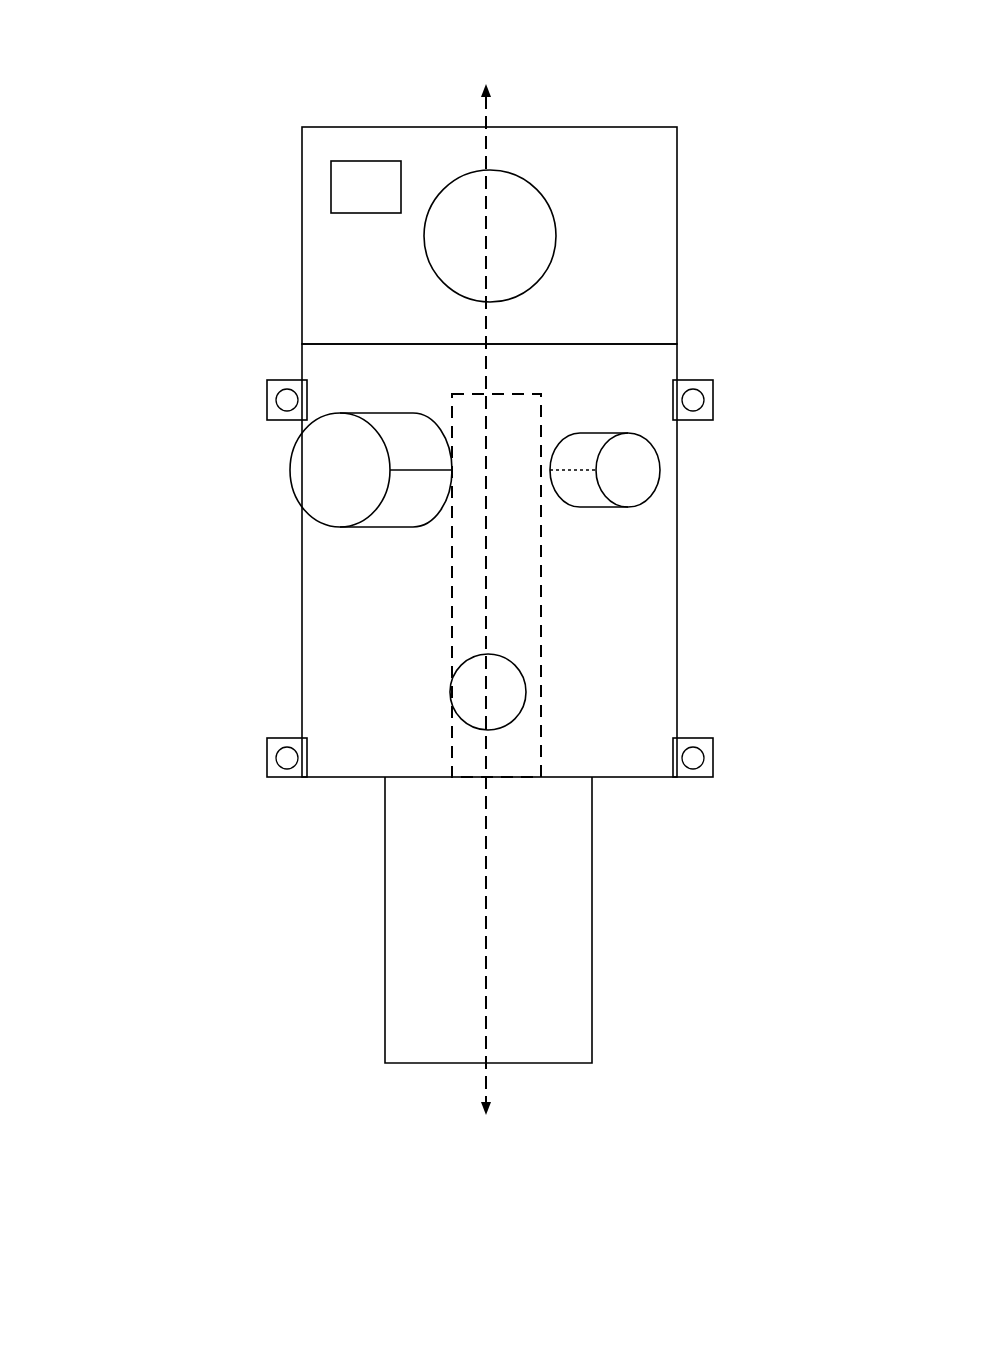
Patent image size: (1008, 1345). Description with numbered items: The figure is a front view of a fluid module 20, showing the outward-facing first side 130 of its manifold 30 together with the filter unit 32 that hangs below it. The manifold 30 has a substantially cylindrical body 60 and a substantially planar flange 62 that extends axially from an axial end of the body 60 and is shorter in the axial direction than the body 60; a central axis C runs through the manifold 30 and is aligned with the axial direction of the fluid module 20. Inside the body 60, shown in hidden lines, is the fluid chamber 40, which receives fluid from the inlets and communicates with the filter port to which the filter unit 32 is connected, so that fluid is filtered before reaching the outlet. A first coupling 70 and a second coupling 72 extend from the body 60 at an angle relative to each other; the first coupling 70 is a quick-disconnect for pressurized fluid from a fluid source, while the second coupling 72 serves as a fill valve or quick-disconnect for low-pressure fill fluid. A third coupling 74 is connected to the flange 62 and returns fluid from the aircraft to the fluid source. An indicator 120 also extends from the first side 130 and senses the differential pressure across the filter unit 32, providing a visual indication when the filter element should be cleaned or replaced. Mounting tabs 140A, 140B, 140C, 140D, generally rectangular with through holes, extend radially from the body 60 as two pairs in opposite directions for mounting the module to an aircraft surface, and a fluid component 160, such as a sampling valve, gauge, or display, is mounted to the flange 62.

The fluid module 20 is at (186, 56).
The manifold 30 is at (183, 654).
The filter unit 32 is at (374, 947).
The fluid chamber 40 is at (546, 603).
The body 60 is at (285, 632).
The flange 62 is at (292, 295).
The first coupling 70 is at (273, 470).
The second coupling 72 is at (667, 467).
The third coupling 74 is at (562, 237).
The indicator 120 is at (534, 688).
The first side 130 is at (157, 502).
The mounting tab 140A is at (260, 396).
The mounting tab 140B is at (260, 750).
The mounting tab 140C is at (717, 398).
The mounting tab 140D is at (717, 757).
The fluid component 160 is at (326, 185).